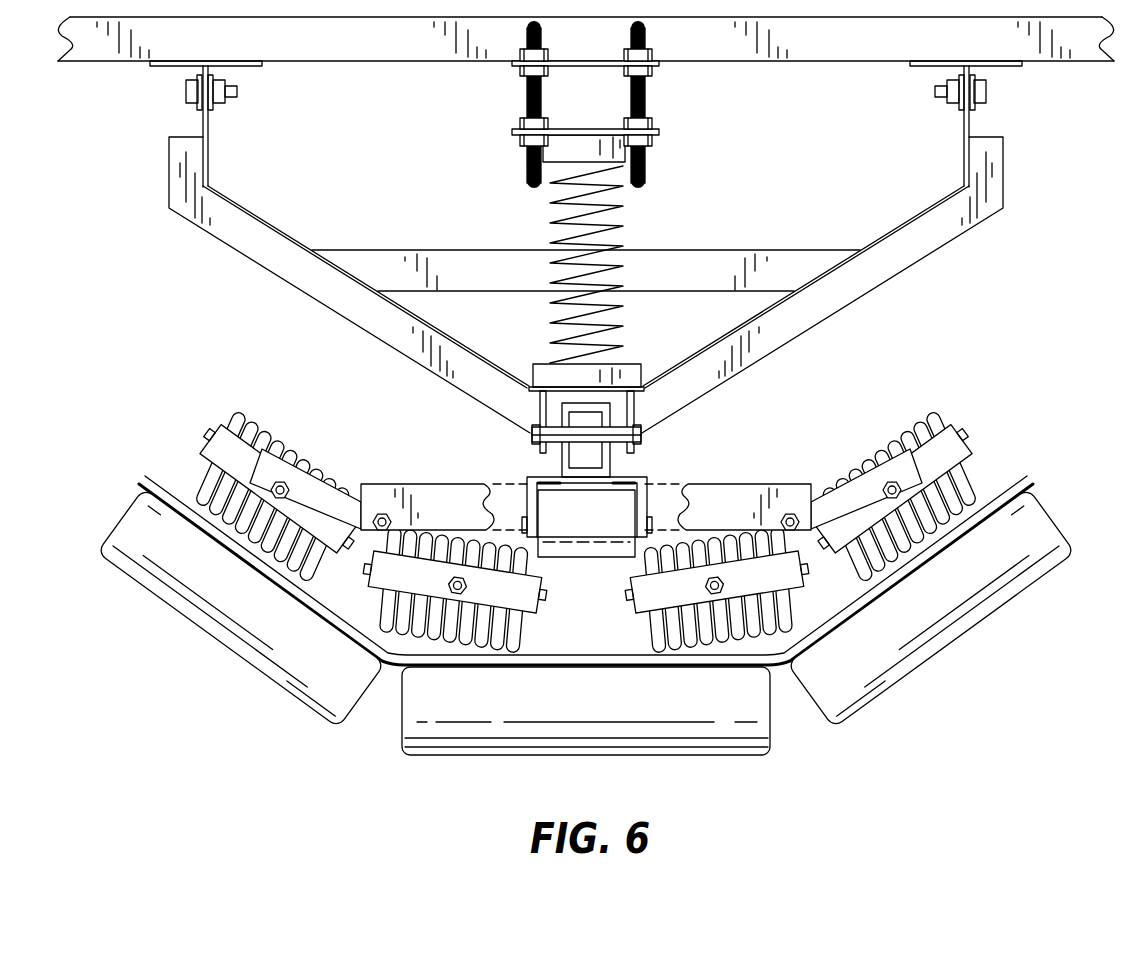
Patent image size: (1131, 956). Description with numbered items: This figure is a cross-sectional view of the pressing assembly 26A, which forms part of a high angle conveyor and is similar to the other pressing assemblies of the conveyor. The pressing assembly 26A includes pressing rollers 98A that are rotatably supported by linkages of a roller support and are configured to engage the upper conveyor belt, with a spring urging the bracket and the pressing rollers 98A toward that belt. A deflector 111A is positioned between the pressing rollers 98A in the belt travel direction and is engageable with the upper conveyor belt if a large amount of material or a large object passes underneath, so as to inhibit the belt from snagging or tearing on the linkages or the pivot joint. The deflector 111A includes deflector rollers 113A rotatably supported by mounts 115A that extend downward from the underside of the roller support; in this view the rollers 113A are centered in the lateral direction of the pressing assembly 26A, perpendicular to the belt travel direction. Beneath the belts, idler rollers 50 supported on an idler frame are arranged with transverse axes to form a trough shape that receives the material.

The pressing assembly 26A is at (992, 322).
The idler roller 50 is at (437, 743).
The pressing roller 98A is at (387, 610).
The deflector 111A is at (515, 458).
The deflector roller 113A is at (567, 508).
The deflector mount 115A is at (637, 477).